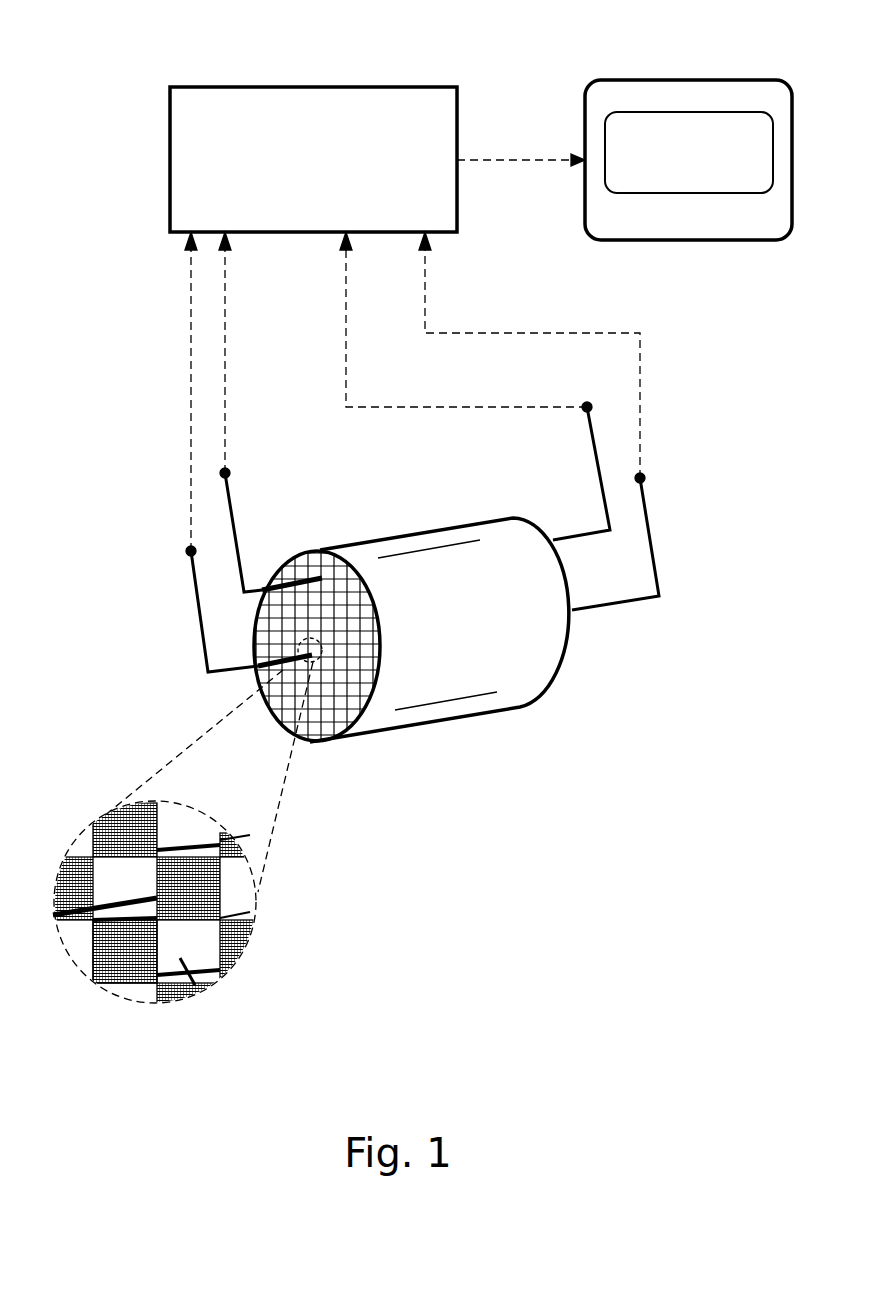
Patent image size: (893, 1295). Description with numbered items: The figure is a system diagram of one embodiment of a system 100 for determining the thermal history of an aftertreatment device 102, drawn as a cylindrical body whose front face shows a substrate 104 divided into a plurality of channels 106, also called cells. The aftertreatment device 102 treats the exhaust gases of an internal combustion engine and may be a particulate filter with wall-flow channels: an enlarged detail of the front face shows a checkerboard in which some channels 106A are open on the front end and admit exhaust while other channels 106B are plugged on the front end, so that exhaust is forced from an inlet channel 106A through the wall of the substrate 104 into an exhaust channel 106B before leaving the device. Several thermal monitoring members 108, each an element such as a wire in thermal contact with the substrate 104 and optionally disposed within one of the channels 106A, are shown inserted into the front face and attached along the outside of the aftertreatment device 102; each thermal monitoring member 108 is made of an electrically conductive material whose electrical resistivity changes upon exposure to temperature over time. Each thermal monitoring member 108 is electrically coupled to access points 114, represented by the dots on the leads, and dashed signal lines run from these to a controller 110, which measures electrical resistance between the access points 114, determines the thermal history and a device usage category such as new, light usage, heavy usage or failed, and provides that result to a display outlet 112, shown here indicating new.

The system 100 is at (68, 50).
The aftertreatment device 102 is at (450, 720).
The substrate 104 is at (223, 940).
The channels 106 is at (337, 726).
The inlet channel 106A is at (200, 985).
The exhaust channel 106B is at (130, 985).
The thermal monitoring member 108 is at (306, 576).
The controller 110 is at (405, 319).
The display outlet 112 is at (686, 80).
The access points 114 is at (230, 470).